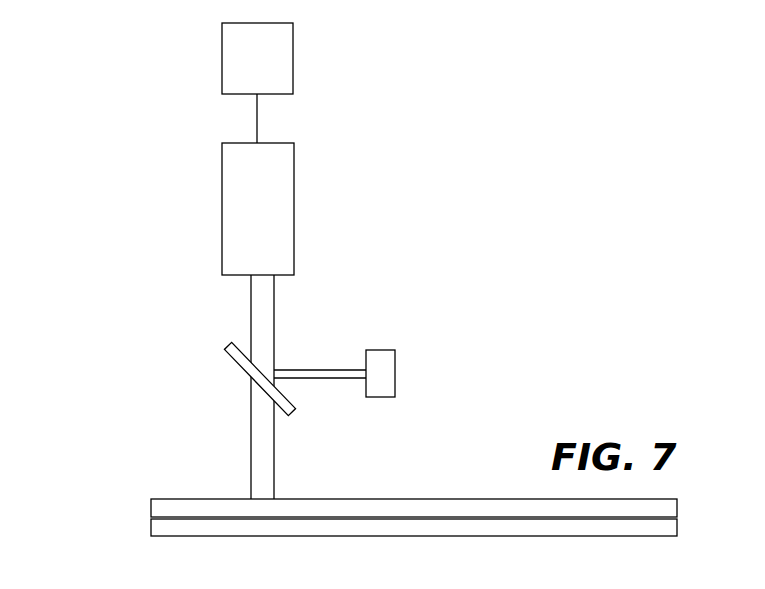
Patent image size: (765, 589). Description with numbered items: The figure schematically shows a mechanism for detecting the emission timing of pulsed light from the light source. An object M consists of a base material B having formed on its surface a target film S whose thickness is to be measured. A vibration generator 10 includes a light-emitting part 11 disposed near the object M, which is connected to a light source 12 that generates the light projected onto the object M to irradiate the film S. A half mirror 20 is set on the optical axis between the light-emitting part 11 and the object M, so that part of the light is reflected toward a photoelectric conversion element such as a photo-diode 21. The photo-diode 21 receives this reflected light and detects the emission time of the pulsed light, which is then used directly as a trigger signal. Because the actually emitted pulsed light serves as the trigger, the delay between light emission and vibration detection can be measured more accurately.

The vibration generator 10 is at (72, 67).
The light-emitting part 11 is at (222, 183).
The light source 12 is at (222, 60).
The half mirror 20 is at (235, 358).
The photo-diode 21 is at (380, 350).
The object M is at (75, 465).
The target film S is at (151, 507).
The base material B is at (151, 528).